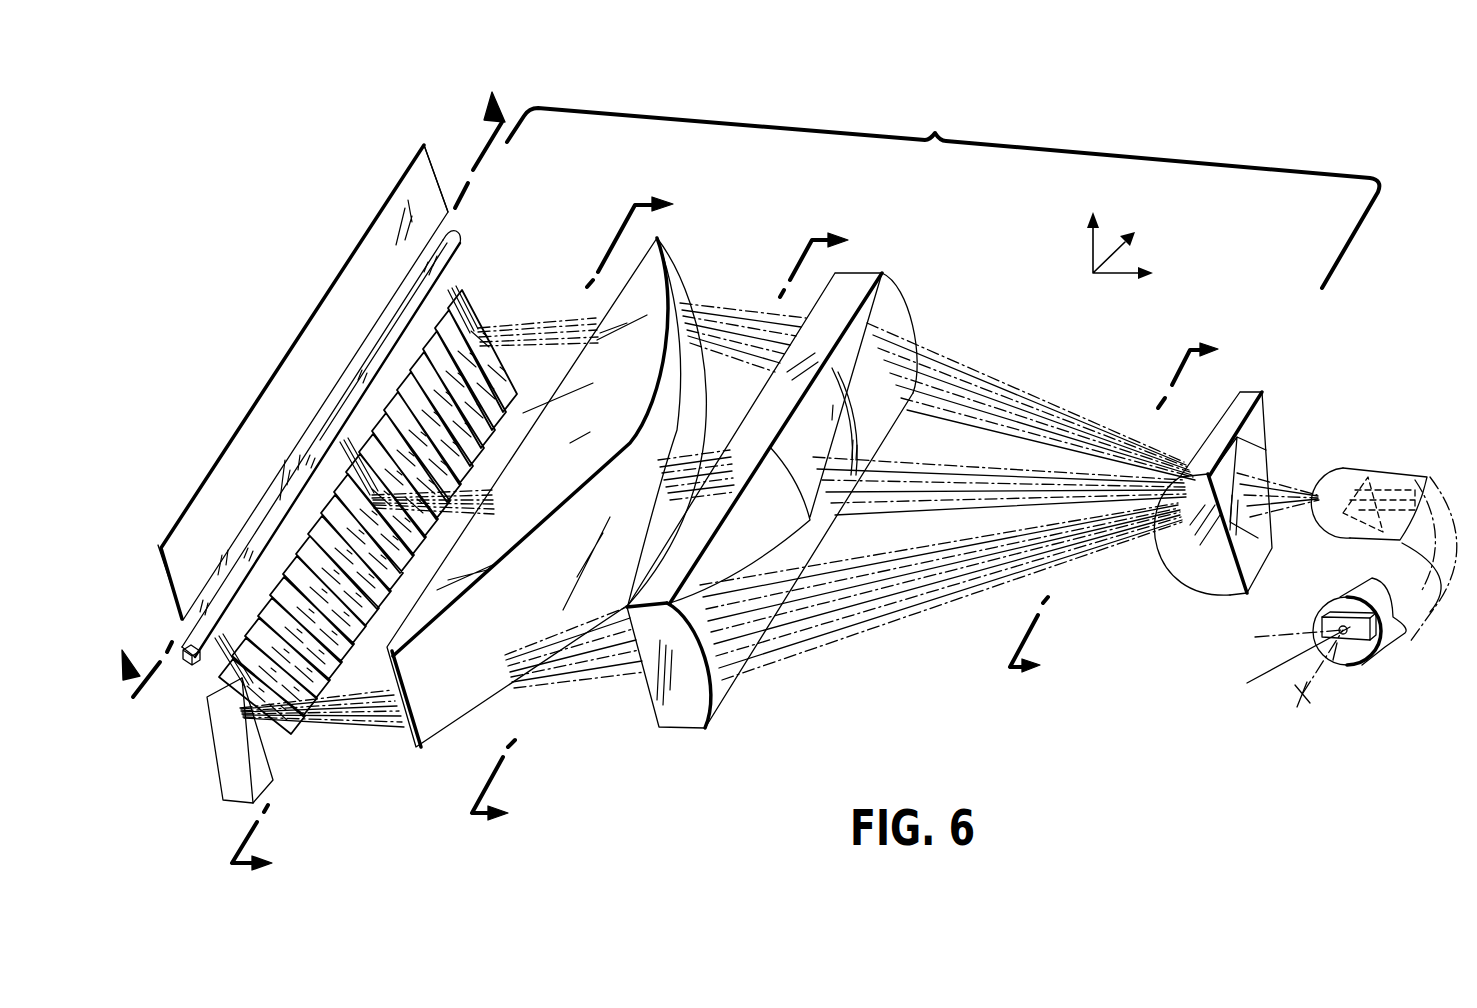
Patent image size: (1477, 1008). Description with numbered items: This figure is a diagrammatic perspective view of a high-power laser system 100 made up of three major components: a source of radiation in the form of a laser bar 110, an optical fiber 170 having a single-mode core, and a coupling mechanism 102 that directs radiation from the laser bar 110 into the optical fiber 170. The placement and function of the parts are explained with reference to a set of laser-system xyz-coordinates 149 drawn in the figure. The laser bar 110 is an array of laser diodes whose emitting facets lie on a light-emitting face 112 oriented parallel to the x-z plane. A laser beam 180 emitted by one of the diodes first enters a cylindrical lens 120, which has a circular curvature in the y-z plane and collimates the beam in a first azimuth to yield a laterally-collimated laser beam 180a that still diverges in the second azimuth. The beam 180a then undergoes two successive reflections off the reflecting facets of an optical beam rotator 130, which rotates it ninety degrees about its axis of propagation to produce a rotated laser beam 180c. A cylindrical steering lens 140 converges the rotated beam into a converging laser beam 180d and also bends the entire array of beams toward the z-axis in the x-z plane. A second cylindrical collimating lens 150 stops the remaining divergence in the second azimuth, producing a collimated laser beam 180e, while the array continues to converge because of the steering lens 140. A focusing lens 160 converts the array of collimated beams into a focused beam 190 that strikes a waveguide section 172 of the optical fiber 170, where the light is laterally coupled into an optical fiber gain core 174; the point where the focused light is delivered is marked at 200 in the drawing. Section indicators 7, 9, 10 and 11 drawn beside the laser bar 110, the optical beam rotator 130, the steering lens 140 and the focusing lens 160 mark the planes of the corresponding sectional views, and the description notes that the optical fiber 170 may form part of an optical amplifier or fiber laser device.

The high-power laser system 100 is at (813, 207).
The coupling mechanism 102 is at (943, 195).
The laser bar 110 is at (388, 198).
The light-emitting face 112 is at (447, 214).
The cylindrical lens 120 is at (460, 250).
The optical beam rotator 130 is at (473, 318).
The cylindrical steering lens 140 is at (660, 251).
The laser-system xyz-coordinates 149 is at (1133, 257).
The second cylindrical collimating lens 150 is at (896, 297).
The focusing lens 160 is at (1273, 418).
The optical fiber 170 is at (1387, 643).
The waveguide section 172 is at (1337, 643).
The optical fiber gain core 174 is at (1344, 627).
The laser beam 180 is at (185, 632).
The laterally-collimated laser beam 180a is at (215, 690).
The rotated laser beam 180c is at (365, 728).
The converging laser beam 180d is at (618, 677).
The collimated laser beam 180e is at (868, 690).
The focused beam 190 is at (1300, 490).
The focal point 200 is at (1304, 700).
The section line 7- 7 is at (306, 382).
The section line 9- 9 is at (461, 535).
The section line 10- 10 is at (672, 528).
The section line 11- 11 is at (1124, 508).